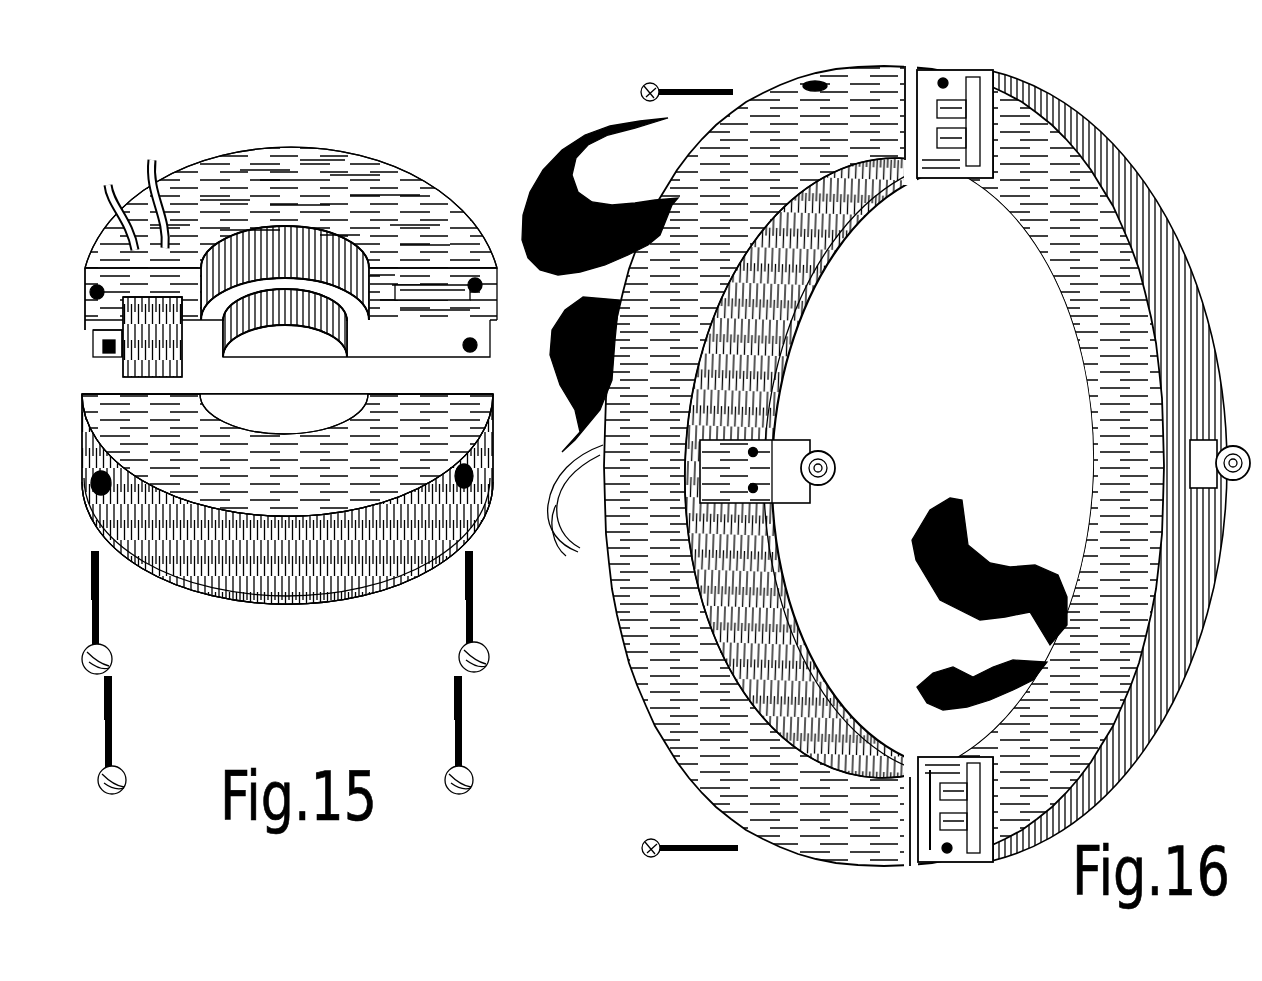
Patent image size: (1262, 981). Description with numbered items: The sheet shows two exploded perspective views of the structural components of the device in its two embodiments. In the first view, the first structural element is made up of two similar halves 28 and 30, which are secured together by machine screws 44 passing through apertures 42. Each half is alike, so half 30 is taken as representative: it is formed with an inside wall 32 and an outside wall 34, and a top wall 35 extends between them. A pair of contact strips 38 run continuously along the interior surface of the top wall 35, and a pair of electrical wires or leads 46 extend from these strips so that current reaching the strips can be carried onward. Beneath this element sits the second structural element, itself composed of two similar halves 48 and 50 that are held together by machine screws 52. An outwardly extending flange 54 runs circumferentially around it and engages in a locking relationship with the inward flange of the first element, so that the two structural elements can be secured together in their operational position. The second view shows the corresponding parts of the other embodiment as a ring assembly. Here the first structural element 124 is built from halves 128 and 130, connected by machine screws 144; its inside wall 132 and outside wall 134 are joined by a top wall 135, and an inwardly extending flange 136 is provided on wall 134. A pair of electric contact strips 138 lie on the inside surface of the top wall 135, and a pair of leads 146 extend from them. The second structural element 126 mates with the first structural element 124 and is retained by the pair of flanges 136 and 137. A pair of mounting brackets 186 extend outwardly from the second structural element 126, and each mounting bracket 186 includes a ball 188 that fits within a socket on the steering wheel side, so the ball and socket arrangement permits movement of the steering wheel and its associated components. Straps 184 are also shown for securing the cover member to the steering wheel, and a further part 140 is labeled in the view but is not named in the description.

In FIG. 15, the half 28 is at (375, 185).
In FIG. 15, the half 30 is at (333, 442).
In FIG. 15, the inside wall 32 is at (312, 236).
In FIG. 15, the outside wall 34 is at (83, 308).
In FIG. 15, the top wall 35 is at (300, 160).
In FIG. 15, the contact strips 38 is at (408, 285).
In FIG. 15, the apertures 42 is at (90, 292).
In FIG. 15, the machine screws 44 is at (103, 628).
In FIG. 15, the electrical wires or leads 46 is at (170, 125).
In FIG. 15, the half 48 is at (125, 363).
In FIG. 15, the half 50 is at (292, 600).
In FIG. 15, the machine screws 52 is at (118, 690).
In FIG. 15, the outwardly extending flange 54 is at (103, 320).
In FIG. 16, the first structural element 124 is at (1066, 86).
In FIG. 16, the second structural element 126 is at (1150, 745).
In FIG. 16, the half 128 is at (930, 70).
In FIG. 16, the half 130 is at (745, 104).
In FIG. 16, the inside wall 132 is at (1098, 543).
In FIG. 16, the outside wall 134 is at (935, 860).
In FIG. 16, the top wall 135 is at (925, 765).
In FIG. 16, the inwardly extending flange 136 is at (992, 765).
In FIG. 16, the flange 137 is at (975, 862).
In FIG. 16, the electric contact strips 138 is at (940, 778).
In FIG. 16, the hinge pin 140 is at (972, 78).
In FIG. 16, the machine screws 144 is at (668, 84).
In FIG. 16, the leads 146 is at (575, 540).
In FIG. 16, the straps 184 is at (600, 290).
In FIG. 16, the mounting brackets 186 is at (780, 440).
In FIG. 16, the ball 188 is at (838, 462).